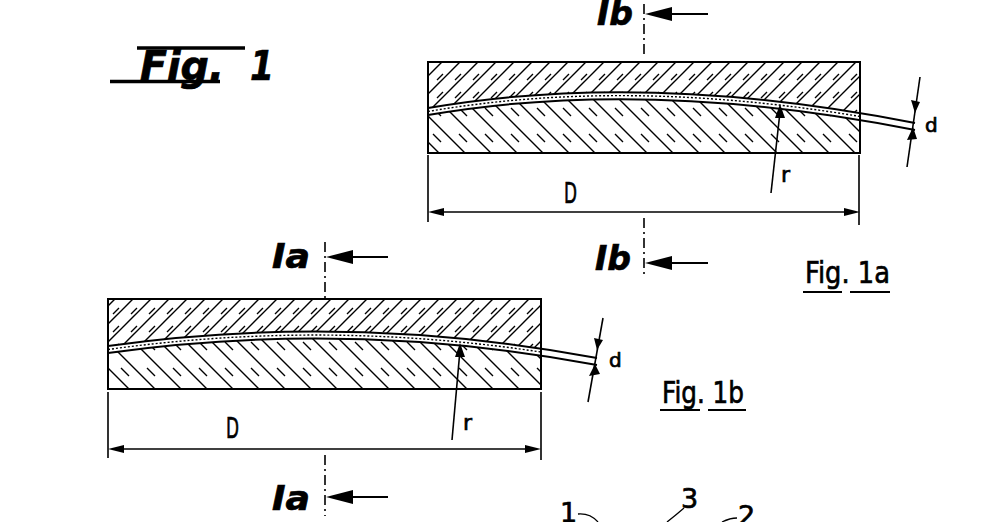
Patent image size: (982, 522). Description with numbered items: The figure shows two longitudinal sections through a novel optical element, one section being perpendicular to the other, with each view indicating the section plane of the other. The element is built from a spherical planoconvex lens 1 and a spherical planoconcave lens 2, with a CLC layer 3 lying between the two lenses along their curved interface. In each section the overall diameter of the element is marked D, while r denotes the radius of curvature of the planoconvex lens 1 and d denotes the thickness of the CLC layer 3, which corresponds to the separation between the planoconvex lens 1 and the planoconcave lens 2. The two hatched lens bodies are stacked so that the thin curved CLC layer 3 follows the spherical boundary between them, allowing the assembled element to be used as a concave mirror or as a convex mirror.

In FIG. 1A, the spherical planoconvex lens 1 is at (440, 134).
In FIG. 1B, the spherical planoconvex lens 1 is at (122, 376).
In FIG. 1A, the spherical planoconcave lens 2 is at (477, 82).
In FIG. 1B, the spherical planoconcave lens 2 is at (112, 312).
In FIG. 1A, the CLC layer 3 is at (798, 104).
In FIG. 1B, the CLC layer 3 is at (483, 337).